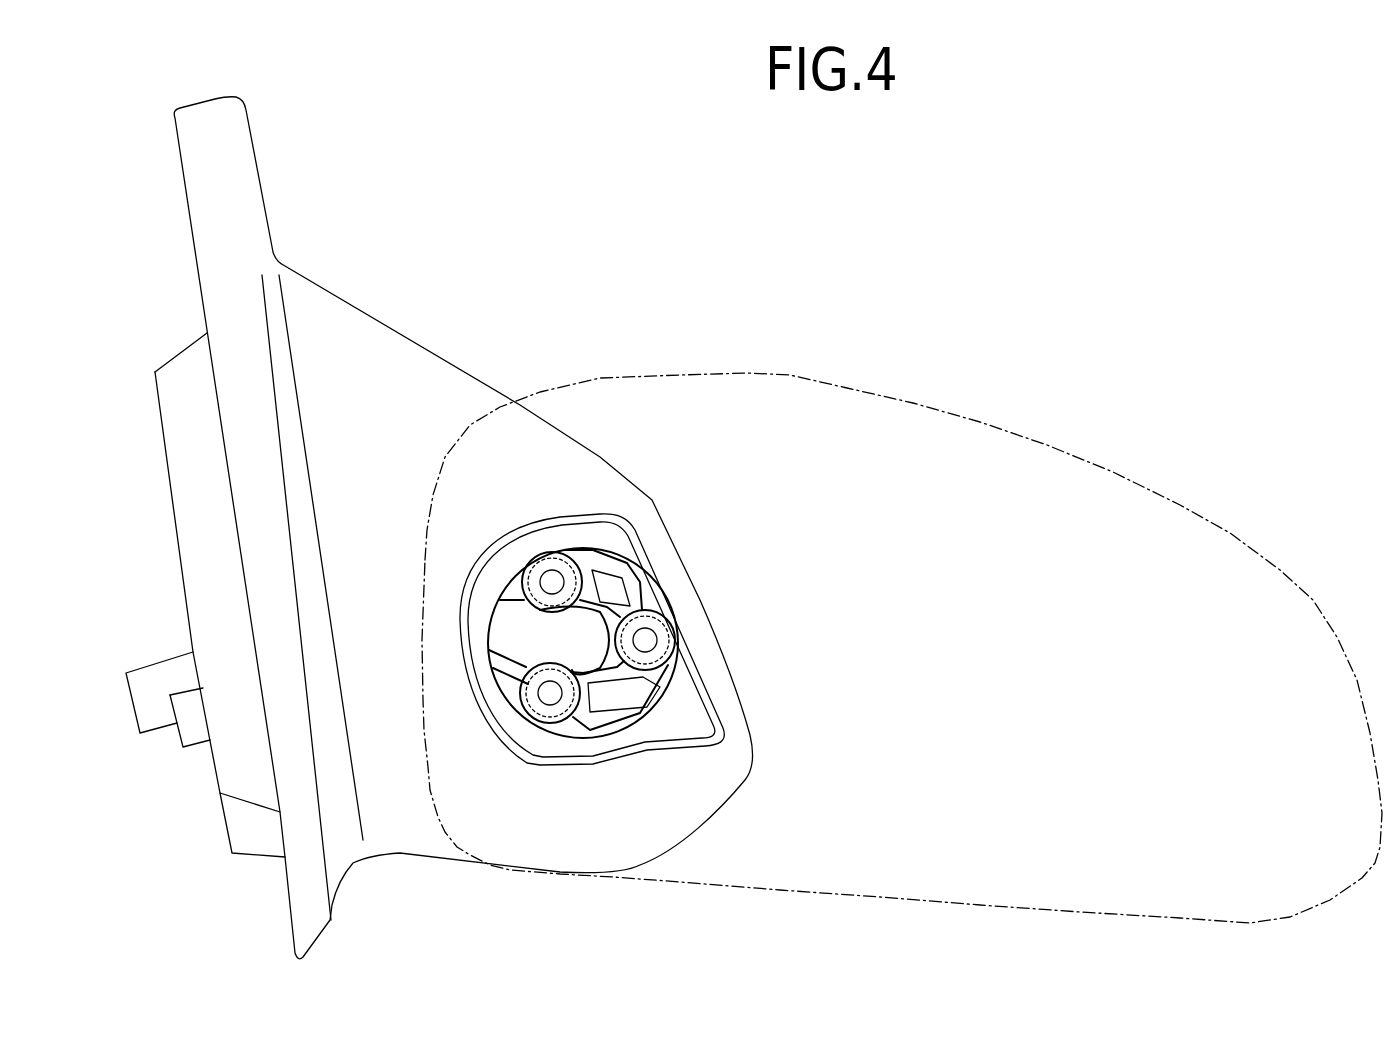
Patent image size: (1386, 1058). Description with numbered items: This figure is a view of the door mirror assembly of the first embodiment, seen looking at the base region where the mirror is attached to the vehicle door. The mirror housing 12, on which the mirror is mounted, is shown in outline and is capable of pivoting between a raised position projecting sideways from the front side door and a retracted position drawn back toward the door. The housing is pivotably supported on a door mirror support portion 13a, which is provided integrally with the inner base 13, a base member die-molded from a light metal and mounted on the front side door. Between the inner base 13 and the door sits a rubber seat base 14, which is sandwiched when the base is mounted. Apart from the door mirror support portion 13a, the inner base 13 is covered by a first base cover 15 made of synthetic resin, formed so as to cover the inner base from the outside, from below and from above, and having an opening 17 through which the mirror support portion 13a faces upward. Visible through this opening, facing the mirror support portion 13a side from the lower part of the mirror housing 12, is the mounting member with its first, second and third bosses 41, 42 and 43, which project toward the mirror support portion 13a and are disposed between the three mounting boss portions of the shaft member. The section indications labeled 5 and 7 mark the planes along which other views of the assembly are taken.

The mirror housing 12 is at (1060, 492).
The inner base 13 is at (607, 737).
The door mirror support portion 13a is at (655, 590).
The rubber seat base 14 is at (192, 490).
The first base cover 15 is at (398, 356).
The opening 17 is at (637, 562).
The first boss 41 is at (678, 634).
The second boss 42 is at (550, 722).
The third boss 43 is at (553, 552).
The section line V-V 5 is at (403, 614).
The section line VII-VII 7 is at (465, 562).